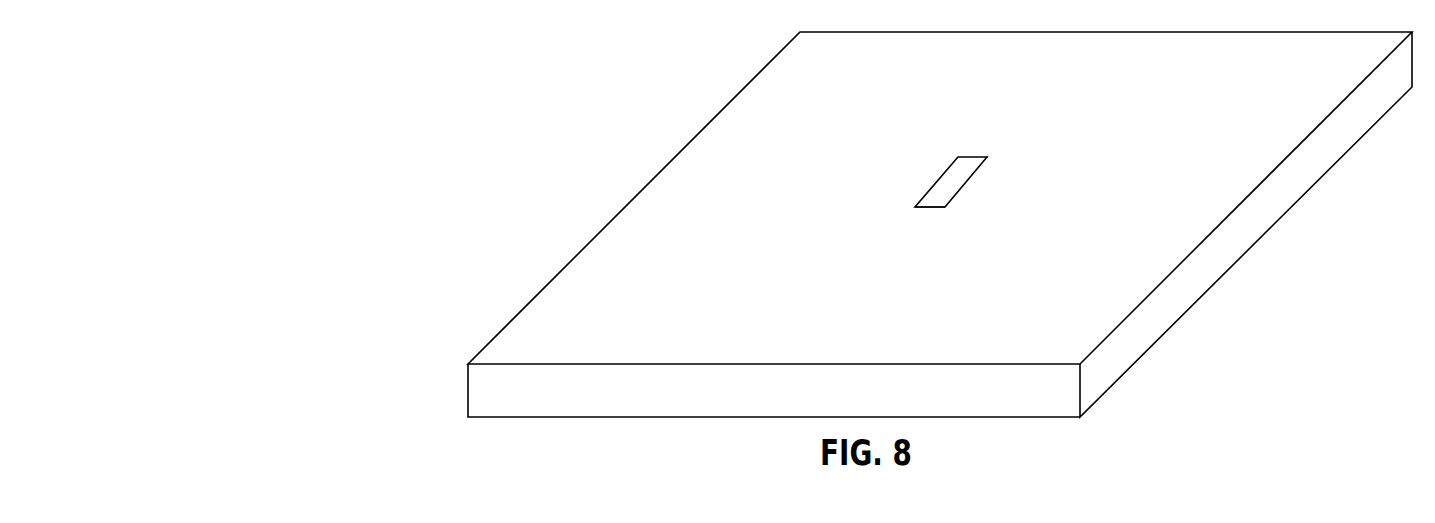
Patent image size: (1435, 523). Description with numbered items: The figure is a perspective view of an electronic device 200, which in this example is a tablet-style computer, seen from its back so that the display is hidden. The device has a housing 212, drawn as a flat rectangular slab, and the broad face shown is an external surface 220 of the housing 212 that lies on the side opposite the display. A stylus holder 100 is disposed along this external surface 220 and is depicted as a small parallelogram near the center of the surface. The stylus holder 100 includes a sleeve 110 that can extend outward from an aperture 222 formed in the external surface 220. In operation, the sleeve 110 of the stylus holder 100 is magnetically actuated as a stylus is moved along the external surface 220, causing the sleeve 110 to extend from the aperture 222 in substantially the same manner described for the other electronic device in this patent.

The electronic device 200 is at (940, 224).
The external surface 220 is at (1113, 133).
The housing 212 is at (1155, 322).
The stylus holder 100 is at (948, 194).
The sleeve 110 is at (955, 172).
The aperture 222 is at (930, 211).